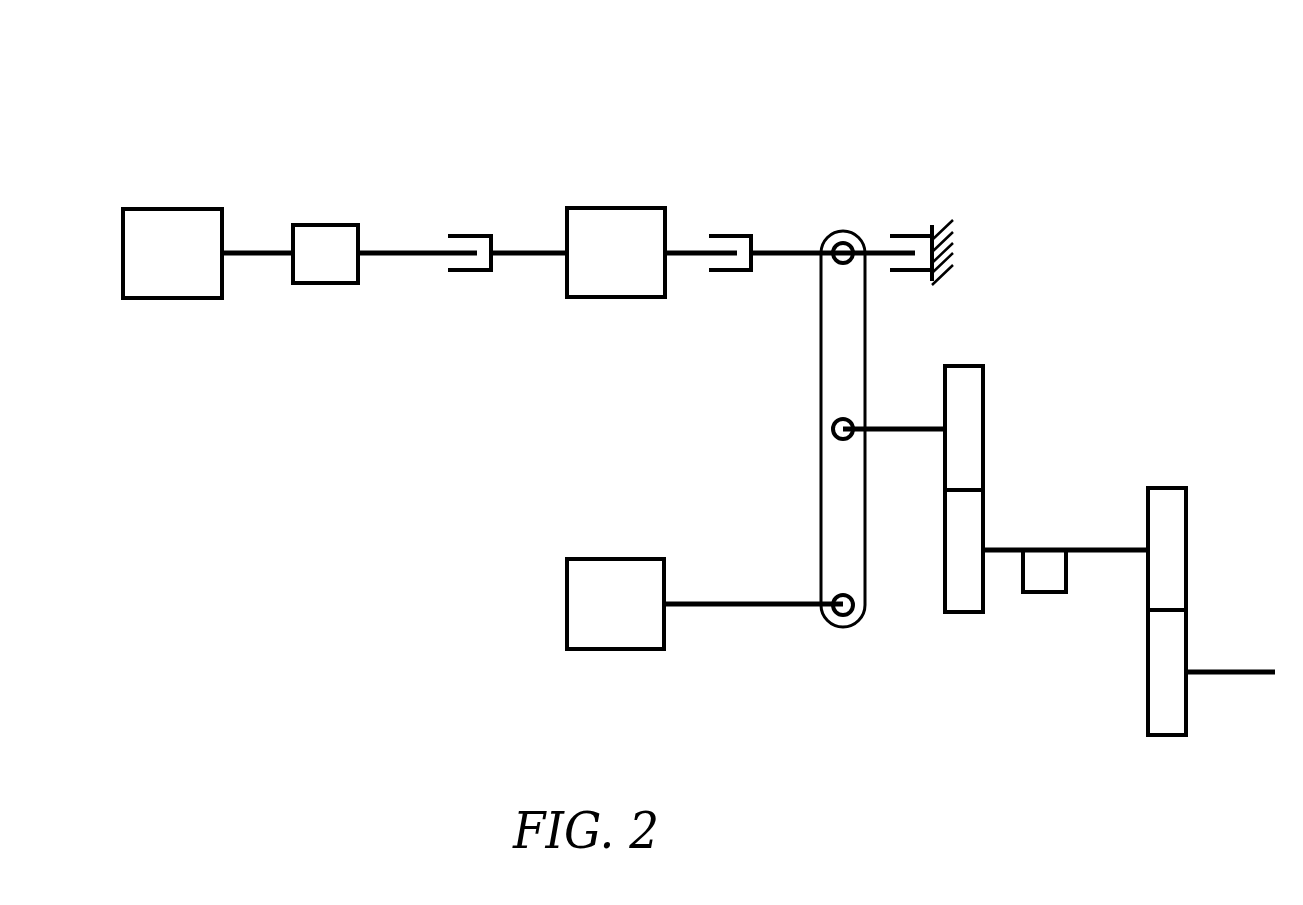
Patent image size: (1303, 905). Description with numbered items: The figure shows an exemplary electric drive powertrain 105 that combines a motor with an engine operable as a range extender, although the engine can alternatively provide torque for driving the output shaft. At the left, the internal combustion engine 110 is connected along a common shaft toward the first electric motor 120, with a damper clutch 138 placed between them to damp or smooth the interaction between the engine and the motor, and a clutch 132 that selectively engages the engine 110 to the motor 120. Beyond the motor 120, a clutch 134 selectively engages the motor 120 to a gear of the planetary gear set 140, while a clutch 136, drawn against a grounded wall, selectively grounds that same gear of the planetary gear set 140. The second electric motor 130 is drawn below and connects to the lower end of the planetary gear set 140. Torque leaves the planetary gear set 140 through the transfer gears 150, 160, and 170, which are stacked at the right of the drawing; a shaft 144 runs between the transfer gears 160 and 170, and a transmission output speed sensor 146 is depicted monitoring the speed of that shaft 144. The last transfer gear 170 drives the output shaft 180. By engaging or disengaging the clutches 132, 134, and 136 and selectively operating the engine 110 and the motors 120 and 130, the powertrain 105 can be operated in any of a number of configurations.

The powertrain 105 is at (135, 131).
The internal combustion engine 110 is at (178, 204).
The damper clutch 138 is at (326, 221).
The clutch 132 is at (471, 232).
The first electric motor 120 is at (615, 204).
The clutch 134 is at (733, 232).
The planetary gear set 140 is at (846, 229).
The clutch 136 is at (913, 221).
The transfer gear 150 is at (988, 383).
The transfer gear 160 is at (992, 610).
The second electric motor 130 is at (616, 555).
The shaft 144 is at (1087, 544).
The transmission output speed sensor 146 is at (1071, 584).
The transfer gear 170 is at (1192, 498).
The output shaft 180 is at (1234, 681).